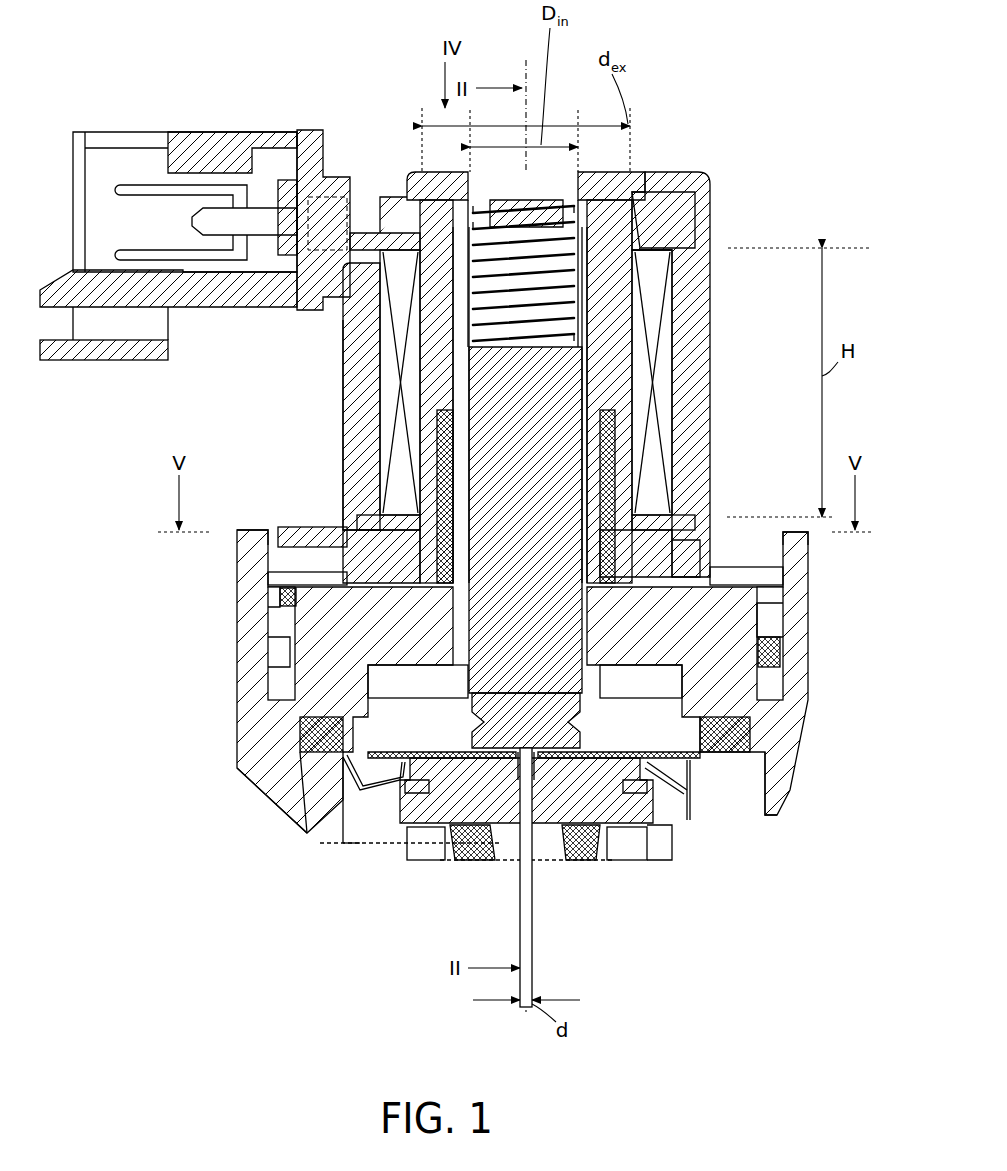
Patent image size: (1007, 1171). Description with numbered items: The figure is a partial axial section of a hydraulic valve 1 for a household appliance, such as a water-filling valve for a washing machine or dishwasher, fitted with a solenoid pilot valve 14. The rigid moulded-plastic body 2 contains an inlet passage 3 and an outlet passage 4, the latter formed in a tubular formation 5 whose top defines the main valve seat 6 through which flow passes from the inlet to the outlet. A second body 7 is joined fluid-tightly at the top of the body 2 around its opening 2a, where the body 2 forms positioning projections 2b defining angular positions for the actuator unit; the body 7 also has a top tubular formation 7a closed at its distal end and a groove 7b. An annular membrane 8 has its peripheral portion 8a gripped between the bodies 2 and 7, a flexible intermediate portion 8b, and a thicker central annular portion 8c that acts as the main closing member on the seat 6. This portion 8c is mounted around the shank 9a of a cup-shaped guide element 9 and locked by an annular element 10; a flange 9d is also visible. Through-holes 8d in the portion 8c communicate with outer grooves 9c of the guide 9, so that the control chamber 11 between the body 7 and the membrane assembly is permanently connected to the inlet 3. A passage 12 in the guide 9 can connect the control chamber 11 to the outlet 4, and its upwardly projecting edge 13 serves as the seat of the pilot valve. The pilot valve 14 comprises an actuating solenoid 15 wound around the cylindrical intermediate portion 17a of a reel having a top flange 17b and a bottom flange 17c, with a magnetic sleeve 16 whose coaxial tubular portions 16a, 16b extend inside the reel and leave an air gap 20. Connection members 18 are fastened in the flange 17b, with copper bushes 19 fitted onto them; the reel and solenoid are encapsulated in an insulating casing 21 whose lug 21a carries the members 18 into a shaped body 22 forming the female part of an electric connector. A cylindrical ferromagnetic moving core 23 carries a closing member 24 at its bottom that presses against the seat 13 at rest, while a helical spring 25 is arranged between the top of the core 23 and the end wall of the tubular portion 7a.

The hydraulic valve 1 is at (228, 882).
The body 2 is at (232, 636).
The opening 2a is at (270, 590).
The positioning projections 2b is at (255, 529).
The inlet passage 3 is at (356, 843).
The outlet passage 4 is at (580, 850).
The tubular formation 5 is at (425, 852).
The seat 6 is at (660, 855).
The second body 7 is at (283, 598).
The top tubular formation 7a is at (630, 272).
The seal groove 7b is at (765, 620).
The annular membrane 8 is at (325, 790).
The peripheral portion 8a is at (320, 735).
The flexible intermediate portion 8b is at (270, 798).
The central annular portion 8c is at (436, 825).
The through-holes 8d is at (385, 832).
The guide element 9 is at (596, 750).
The shank 9a is at (538, 790).
The outer grooves 9c is at (340, 760).
The collar flange 9d is at (343, 840).
The annular element 10 is at (472, 850).
The control chamber 11 is at (525, 681).
The passage 12 is at (518, 790).
The upwardly projecting edge 13 is at (520, 745).
The solenoid pilot valve 14 is at (338, 408).
The actuating solenoid 15 is at (390, 380).
The sleeve 16 is at (640, 170).
The tubular portion 16a is at (680, 215).
The tubular portion 16b is at (620, 480).
The cylindrical intermediate portion 17a is at (640, 455).
The top end flange 17b is at (362, 230).
The bottom end flange 17c is at (695, 532).
The connection members 18 is at (258, 215).
The bushes 19 is at (337, 196).
The air gap 20 is at (595, 350).
The casing 21 is at (712, 308).
The lug 21a is at (330, 190).
The shaped body 22 is at (203, 131).
The moving core 23 is at (268, 575).
The closing member 24 is at (288, 652).
The helical spring 25 is at (545, 215).